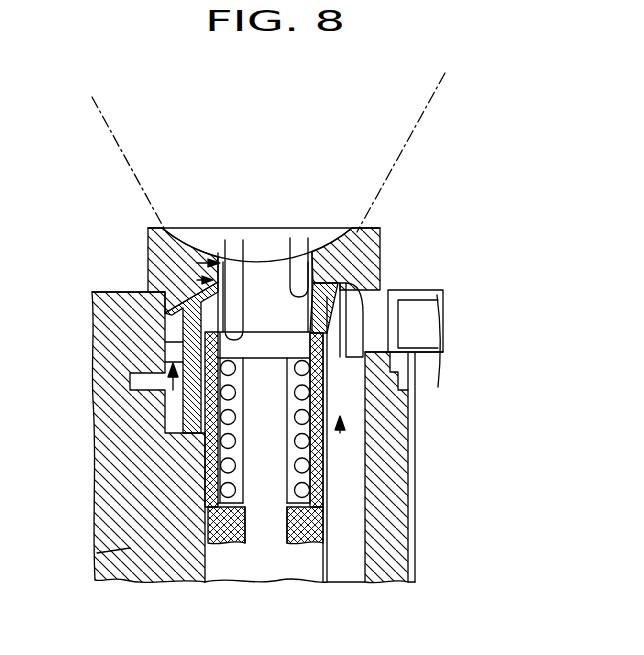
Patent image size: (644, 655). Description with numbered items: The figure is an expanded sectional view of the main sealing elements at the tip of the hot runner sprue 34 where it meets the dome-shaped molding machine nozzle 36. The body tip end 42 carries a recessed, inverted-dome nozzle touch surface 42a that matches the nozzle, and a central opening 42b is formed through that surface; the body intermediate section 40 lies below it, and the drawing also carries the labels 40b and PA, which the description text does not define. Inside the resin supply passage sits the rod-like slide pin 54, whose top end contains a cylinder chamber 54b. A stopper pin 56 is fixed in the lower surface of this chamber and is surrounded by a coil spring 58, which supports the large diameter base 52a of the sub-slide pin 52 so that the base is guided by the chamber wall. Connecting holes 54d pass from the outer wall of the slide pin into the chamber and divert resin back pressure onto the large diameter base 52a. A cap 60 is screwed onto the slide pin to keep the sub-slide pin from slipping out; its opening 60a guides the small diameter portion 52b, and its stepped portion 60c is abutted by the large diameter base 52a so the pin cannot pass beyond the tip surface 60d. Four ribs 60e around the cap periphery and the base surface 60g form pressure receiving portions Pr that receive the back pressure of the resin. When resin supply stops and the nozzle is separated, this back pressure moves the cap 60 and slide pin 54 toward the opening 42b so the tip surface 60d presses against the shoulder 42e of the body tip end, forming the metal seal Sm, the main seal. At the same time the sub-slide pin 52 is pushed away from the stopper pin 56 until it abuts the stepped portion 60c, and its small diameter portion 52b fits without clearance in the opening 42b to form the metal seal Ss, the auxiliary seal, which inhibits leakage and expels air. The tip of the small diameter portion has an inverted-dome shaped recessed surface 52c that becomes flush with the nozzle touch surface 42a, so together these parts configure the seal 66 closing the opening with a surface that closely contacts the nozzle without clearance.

The hot runner sprue 34 is at (525, 210).
The molding machine nozzle 36 is at (425, 110).
The body intermediate section 40 is at (117, 476).
The bottom surface of body 40b is at (200, 540).
The body tip end 42 is at (148, 236).
The nozzle touch surface 42a is at (196, 262).
The opening 42b is at (232, 268).
The shoulder 42e is at (292, 265).
The sub-slide pin 52 is at (285, 314).
The large diameter base 52a is at (398, 299).
The small diameter portion 52b is at (335, 280).
The inverted-dome shaped recessed surface 52c is at (277, 262).
The slide pin 54 is at (378, 590).
The cylinder chamber 54b is at (270, 364).
The connecting holes 54d is at (330, 462).
The stopper pin 56 is at (206, 432).
The coil spring 58 is at (222, 470).
The cap 60 is at (383, 283).
The opening 60a is at (185, 300).
The stepped portion 60c is at (235, 305).
The tip surface 60d is at (312, 272).
The ribs 60e is at (185, 330).
The base surface 60g is at (176, 395).
The seal 66 is at (330, 288).
The seal Ss is at (200, 256).
The seal Sm is at (207, 260).
The pressure receiving portion Pr is at (175, 347).
The pressure passage PA is at (360, 352).